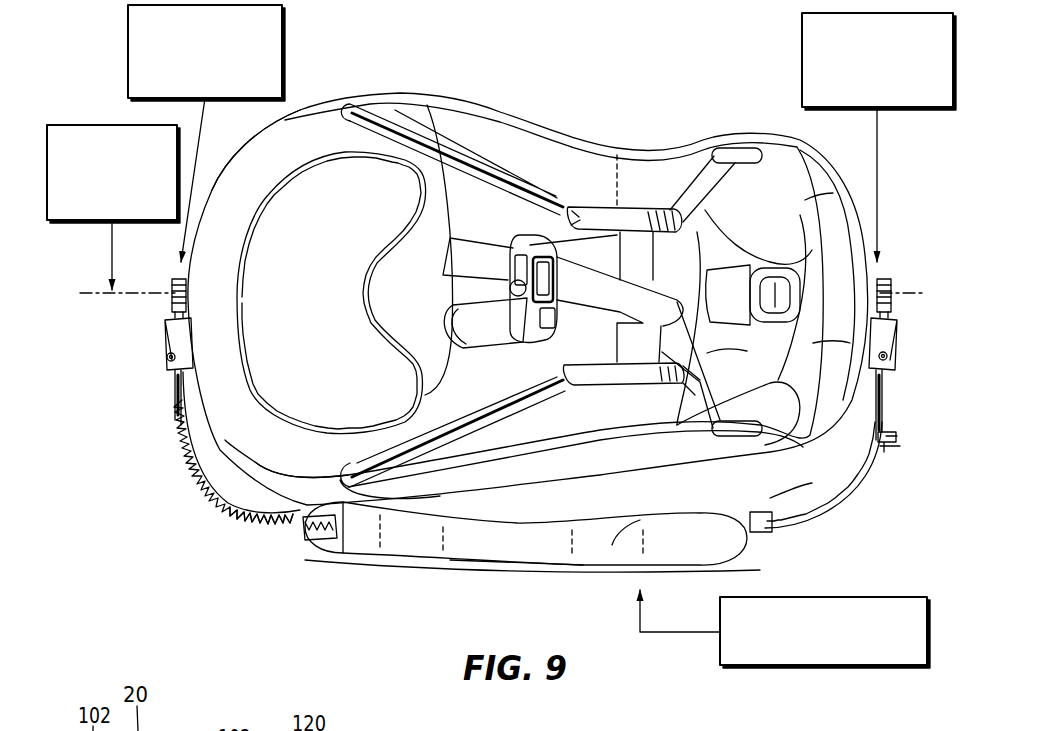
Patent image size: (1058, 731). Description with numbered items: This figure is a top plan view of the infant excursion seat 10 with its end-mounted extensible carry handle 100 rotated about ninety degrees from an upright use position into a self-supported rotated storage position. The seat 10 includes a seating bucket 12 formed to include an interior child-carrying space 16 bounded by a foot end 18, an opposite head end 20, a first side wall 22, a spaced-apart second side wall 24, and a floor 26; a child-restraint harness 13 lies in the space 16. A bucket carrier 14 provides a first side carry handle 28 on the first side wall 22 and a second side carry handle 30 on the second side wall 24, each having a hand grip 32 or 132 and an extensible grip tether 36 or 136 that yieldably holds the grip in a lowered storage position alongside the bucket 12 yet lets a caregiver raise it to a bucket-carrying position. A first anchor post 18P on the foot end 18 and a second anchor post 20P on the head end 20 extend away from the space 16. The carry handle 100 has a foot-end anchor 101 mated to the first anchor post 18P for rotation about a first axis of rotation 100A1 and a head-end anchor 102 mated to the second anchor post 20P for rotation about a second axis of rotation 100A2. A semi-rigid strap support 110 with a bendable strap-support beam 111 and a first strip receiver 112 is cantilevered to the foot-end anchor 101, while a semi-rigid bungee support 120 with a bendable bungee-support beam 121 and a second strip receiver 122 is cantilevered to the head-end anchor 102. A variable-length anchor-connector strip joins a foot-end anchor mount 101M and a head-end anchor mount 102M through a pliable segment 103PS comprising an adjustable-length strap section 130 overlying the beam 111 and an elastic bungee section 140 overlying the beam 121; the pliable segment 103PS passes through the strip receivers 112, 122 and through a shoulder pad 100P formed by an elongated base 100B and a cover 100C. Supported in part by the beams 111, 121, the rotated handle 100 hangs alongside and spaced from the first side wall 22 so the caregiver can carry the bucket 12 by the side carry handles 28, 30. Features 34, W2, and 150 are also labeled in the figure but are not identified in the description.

The infant excursion seat 10 is at (438, 85).
The seating bucket 12 is at (597, 133).
The child-restraint harness 13 is at (479, 231).
The bucket carrier 14 is at (800, 215).
The interior child-carrying space 16 is at (365, 190).
The foot end 18 is at (860, 200).
The first anchor post 18P is at (802, 35).
The head end 20 is at (212, 187).
The second anchor post 20P is at (282, 35).
The first side wall 22 is at (507, 490).
The second side wall 24 is at (537, 167).
The floor 26 is at (563, 237).
The first side carry handle 28 is at (700, 458).
The second side carry handle 30 is at (641, 197).
The hand grip 32 is at (647, 367).
The strap 34 is at (417, 440).
The extensible grip tether 36 is at (713, 397).
The width W2 is at (617, 150).
The extensible carry handle 100 is at (812, 667).
The first axis of rotation 100A1 is at (887, 290).
The second axis of rotation 100A2 is at (100, 125).
The elongated base 100B is at (600, 567).
The cover 100C is at (613, 542).
The shoulder pad 100P is at (412, 557).
The foot-end anchor 101 is at (897, 342).
The foot-end anchor mount 101M is at (893, 383).
The head-end anchor 102 is at (157, 347).
The head-end anchor mount 102M is at (163, 377).
The pliable segment 103PS is at (227, 527).
The strap support 110 is at (790, 500).
The semi-rigid bendable strap-support beam 111 is at (797, 510).
The first strip receiver 112 is at (763, 533).
The bungee support 120 is at (230, 480).
The semi-rigid bendable bungee-support beam 121 is at (243, 505).
The second strip receiver 122 is at (290, 533).
The adjustable-length strap section 130 is at (830, 522).
The hand grip 132 is at (603, 213).
The extensible grip tether 136 is at (723, 208).
The elastic bungee section 140 is at (180, 487).
The latch 150 is at (900, 430).